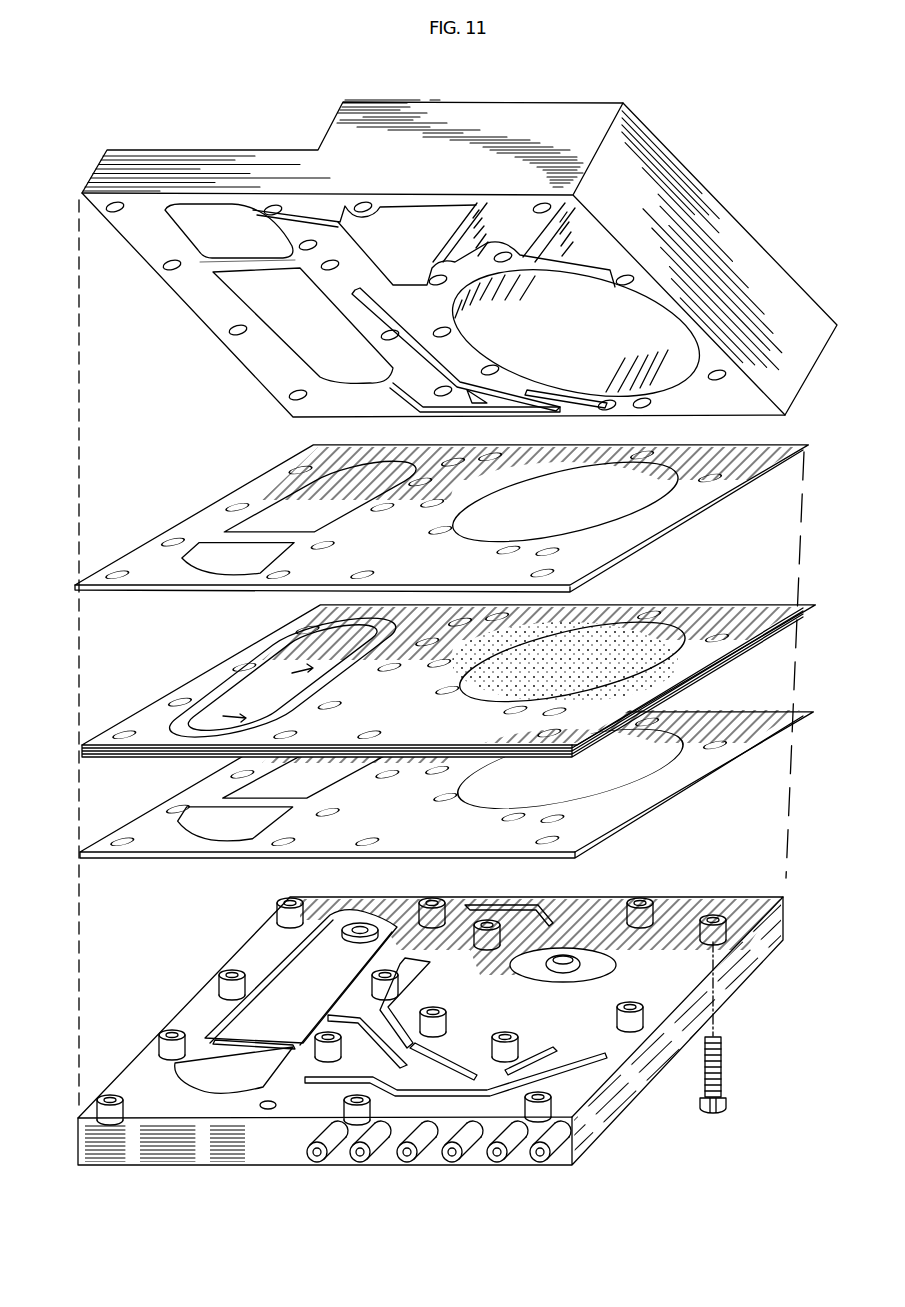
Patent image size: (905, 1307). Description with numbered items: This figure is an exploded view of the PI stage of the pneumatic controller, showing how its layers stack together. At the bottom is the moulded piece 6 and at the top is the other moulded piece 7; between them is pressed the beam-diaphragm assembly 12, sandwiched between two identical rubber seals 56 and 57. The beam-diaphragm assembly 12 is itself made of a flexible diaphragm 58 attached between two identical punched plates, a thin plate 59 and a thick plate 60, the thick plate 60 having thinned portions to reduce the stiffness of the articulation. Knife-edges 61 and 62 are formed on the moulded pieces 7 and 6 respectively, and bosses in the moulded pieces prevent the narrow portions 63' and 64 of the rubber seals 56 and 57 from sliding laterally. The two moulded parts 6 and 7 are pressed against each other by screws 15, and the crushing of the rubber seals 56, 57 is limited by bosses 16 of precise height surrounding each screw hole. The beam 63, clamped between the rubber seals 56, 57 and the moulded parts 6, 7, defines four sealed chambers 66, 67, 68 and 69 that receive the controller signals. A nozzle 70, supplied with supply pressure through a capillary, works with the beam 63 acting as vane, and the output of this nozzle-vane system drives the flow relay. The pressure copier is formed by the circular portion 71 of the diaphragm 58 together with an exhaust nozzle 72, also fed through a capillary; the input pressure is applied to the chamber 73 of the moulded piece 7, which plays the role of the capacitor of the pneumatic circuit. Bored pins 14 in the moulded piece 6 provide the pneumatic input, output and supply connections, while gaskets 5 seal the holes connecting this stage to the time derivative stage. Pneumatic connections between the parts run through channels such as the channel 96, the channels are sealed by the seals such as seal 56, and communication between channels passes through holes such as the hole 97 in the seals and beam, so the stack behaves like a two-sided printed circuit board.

The gaskets 5 is at (268, 684).
The moulded piece 6 is at (430, 1030).
The moulded piece 7 is at (459, 259).
The beam-diaphragm assembly 12 is at (73, 740).
The bored pins 14 is at (360, 1152).
The screws 15 is at (724, 1090).
The bosses 16 is at (722, 912).
The rubber seal 56 is at (446, 784).
The rubber seal 57 is at (441, 574).
The flexible diaphragm 58 is at (438, 664).
The thin plate 59 is at (735, 614).
The thick plate 60 is at (792, 631).
The knife-edge 61 is at (282, 258).
The knife-edge 62 is at (238, 1045).
The beam 63 is at (283, 677).
The narrow portion 63' is at (327, 765).
The narrow portion 64 is at (272, 535).
The sealed chamber 66 is at (240, 1076).
The sealed chamber 67 is at (220, 237).
The sealed chamber 68 is at (322, 991).
The sealed chamber 69 is at (326, 337).
The nozzle 70 is at (358, 940).
The circular portion 71 is at (578, 632).
The exhaust nozzle 72 is at (572, 960).
The chamber 73 is at (540, 322).
The channel 96 is at (432, 1056).
The hole 97 is at (420, 507).